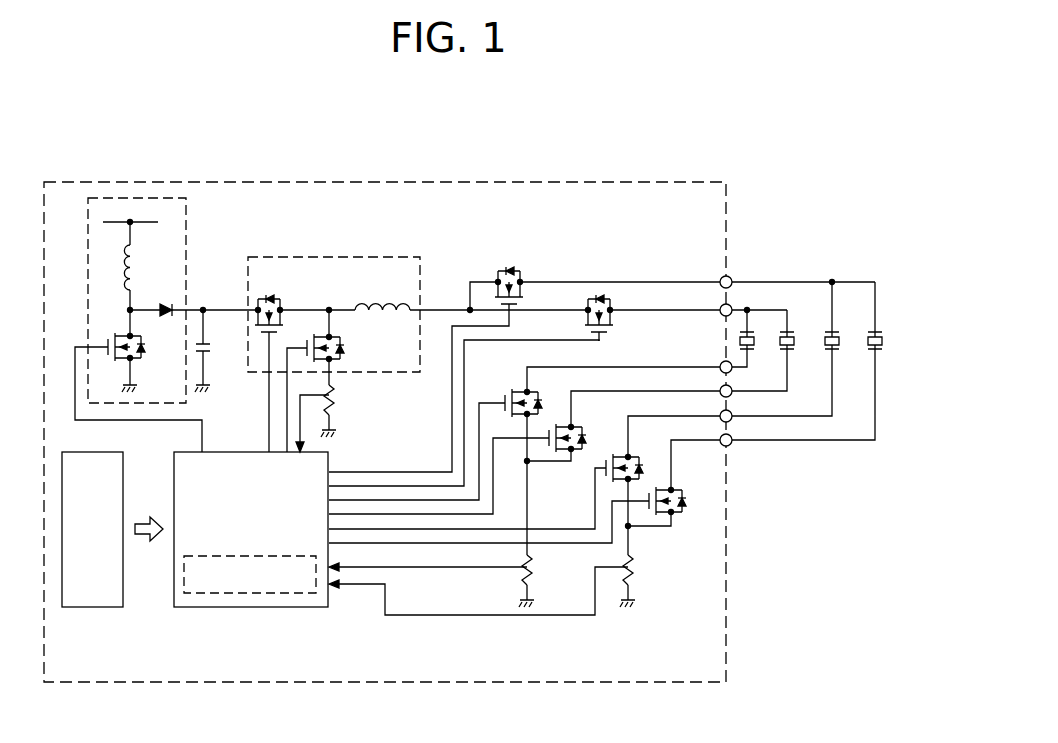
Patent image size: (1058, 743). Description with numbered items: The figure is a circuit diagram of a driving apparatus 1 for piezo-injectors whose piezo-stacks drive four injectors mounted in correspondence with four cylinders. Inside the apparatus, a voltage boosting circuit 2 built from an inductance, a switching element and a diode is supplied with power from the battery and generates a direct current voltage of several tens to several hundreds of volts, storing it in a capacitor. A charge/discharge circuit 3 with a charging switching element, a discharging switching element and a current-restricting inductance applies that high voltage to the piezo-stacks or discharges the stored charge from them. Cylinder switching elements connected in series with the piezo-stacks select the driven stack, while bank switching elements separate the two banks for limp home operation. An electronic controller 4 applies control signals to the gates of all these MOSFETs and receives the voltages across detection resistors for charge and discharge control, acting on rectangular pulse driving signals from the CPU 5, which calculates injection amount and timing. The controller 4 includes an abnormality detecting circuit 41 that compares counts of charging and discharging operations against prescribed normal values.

The driving apparatus 1 is at (118, 182).
The voltage boosting circuit 2 is at (188, 214).
The charge/discharge circuit 3 is at (322, 257).
The electronic controller 4 is at (174, 585).
The CPU 5 is at (92, 607).
The abnormality detecting circuit 41 is at (263, 594).